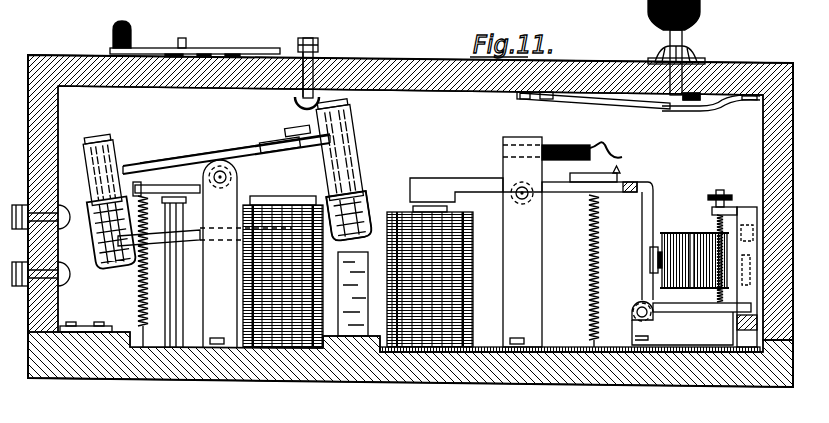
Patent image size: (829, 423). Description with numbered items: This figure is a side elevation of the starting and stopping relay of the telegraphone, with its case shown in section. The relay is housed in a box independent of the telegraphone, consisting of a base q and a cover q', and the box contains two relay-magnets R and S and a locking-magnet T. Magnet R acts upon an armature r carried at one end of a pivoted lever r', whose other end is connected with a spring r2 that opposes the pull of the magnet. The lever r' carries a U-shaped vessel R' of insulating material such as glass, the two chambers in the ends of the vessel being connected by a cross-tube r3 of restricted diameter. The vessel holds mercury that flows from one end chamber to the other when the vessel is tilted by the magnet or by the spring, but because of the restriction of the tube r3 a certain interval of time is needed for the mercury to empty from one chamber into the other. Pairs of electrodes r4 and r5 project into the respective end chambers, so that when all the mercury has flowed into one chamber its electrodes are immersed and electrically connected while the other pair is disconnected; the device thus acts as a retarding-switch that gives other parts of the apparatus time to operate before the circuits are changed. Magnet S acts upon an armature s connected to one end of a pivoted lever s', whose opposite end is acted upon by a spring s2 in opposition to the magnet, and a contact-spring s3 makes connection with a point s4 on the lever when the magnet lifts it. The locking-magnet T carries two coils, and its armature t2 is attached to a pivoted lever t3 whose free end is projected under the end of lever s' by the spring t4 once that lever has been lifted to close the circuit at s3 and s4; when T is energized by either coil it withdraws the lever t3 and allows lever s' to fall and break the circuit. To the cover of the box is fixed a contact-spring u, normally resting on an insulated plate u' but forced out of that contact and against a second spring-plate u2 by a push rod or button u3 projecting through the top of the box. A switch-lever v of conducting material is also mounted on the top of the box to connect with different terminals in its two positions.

The base q is at (402, 234).
The cover q' is at (349, 71).
The switch-lever v is at (249, 54).
The push rod or button u3 is at (687, 50).
The insulated plate u' is at (707, 70).
The contact-spring u is at (593, 106).
The second spring-plate u2 is at (711, 111).
The armature r is at (226, 159).
The pivoted lever r' is at (211, 162).
The cross-tube r3 is at (195, 248).
The U-shaped vessel R' is at (346, 169).
The electrodes r4 is at (365, 195).
The electrodes r5 is at (97, 228).
The spring r2 is at (139, 296).
The relay-magnet R is at (280, 304).
The relay-magnet S is at (440, 276).
The armature s is at (456, 180).
The pivoted lever s' is at (560, 242).
The contact-spring s3 is at (582, 140).
The contact point s4 is at (622, 170).
The spring s2 is at (603, 271).
The pivoted lever t3 is at (652, 228).
The armature t2 is at (650, 265).
The locking-magnet T is at (694, 245).
The spring t4 is at (722, 291).